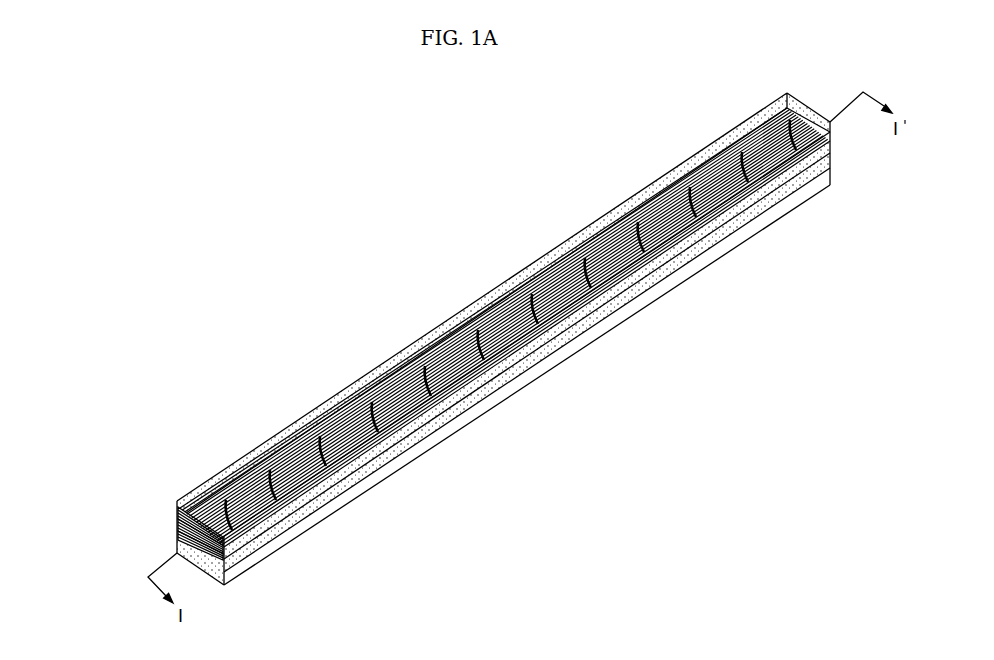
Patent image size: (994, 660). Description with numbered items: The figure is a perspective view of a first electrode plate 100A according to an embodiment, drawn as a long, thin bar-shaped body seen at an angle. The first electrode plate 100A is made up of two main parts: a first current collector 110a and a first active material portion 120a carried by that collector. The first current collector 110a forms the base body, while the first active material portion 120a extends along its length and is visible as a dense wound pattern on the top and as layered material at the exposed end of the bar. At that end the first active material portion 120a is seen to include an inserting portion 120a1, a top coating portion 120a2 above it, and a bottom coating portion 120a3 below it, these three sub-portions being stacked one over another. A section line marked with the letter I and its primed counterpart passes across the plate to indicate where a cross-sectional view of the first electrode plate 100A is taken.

The first electrode plate 100A is at (226, 288).
The first current collector 110a is at (846, 156).
The first active material portion 120a is at (97, 497).
The inserting portion 120a1 is at (186, 529).
The top coating portion 120a2 is at (184, 510).
The bottom coating portion 120a3 is at (188, 547).